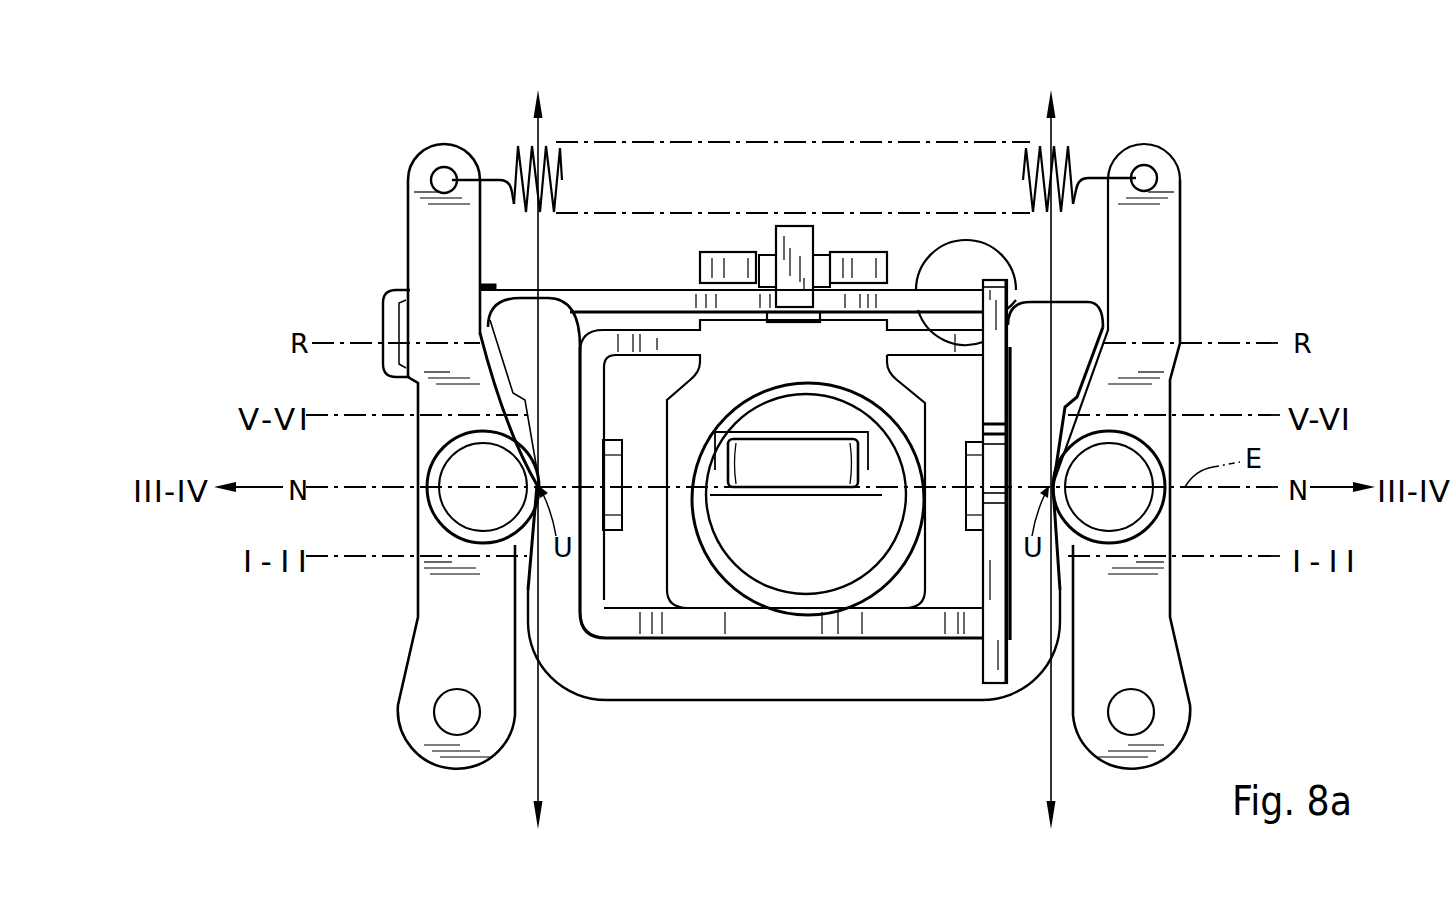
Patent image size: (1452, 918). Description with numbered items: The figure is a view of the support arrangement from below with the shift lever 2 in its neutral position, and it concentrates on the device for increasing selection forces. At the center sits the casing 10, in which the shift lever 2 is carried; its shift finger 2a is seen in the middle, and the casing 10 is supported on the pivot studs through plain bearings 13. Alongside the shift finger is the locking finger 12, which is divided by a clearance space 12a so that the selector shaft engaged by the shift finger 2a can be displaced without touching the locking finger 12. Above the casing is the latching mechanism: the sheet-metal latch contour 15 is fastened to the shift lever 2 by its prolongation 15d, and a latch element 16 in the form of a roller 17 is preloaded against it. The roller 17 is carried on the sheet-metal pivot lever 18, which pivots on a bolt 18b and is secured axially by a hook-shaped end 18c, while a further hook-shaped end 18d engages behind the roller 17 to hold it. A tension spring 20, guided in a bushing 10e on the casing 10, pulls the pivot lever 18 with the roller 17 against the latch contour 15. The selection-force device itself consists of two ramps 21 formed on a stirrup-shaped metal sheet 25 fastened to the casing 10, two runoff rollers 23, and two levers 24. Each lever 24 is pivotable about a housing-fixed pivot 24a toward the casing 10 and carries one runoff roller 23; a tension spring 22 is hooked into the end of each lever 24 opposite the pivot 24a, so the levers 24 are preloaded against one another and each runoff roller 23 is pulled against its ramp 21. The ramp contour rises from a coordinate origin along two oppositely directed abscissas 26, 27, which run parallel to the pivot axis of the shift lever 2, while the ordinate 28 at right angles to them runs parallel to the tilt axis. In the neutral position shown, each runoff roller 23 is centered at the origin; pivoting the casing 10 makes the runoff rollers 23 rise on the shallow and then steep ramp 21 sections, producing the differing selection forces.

The shift lever 2 is at (738, 524).
The shift finger 2a is at (780, 466).
The casing 10 is at (705, 622).
The bushing 10e is at (1006, 270).
The locking finger 12 is at (1021, 622).
The clearance space 12a is at (1000, 457).
The plain bearings 13 is at (612, 470).
The latch contour 15 is at (733, 252).
The prolongation 15d is at (878, 596).
The latch element 16 is at (828, 256).
The roller 17 is at (794, 271).
The pivot lever 18 is at (622, 300).
The bolt 18b is at (488, 284).
The hook-shaped end 18c is at (393, 310).
The further hook-shaped end 18d is at (790, 240).
The spring 20 is at (951, 278).
The ramps 21 is at (513, 337).
The spring 22 is at (1060, 143).
The runoff roller 23 is at (460, 502).
The levers 24 is at (425, 243).
The pivot 24a is at (447, 713).
The metal sheet 25 is at (793, 676).
The abscissa 26 is at (541, 128).
The abscissa 27 is at (541, 770).
The ordinate 28 is at (264, 484).